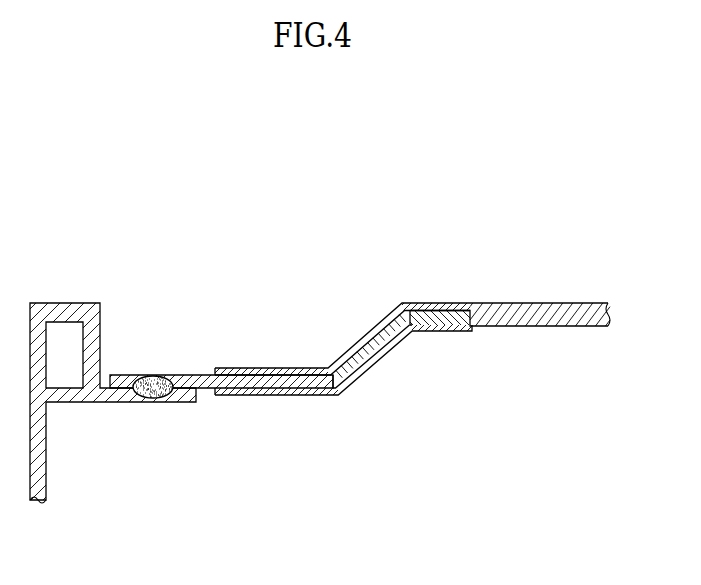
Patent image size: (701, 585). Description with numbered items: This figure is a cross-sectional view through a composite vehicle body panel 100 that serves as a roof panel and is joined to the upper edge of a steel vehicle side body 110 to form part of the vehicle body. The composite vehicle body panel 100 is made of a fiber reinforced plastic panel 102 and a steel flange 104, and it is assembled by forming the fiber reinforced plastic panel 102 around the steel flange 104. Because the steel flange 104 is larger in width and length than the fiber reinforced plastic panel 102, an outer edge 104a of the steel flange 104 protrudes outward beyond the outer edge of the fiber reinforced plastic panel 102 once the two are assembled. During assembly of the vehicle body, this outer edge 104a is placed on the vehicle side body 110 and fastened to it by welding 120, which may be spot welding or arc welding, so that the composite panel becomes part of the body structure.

The composite vehicle body panel 100 is at (360, 349).
The fiber reinforced plastic panel 102 is at (541, 327).
The steel flange 104 is at (379, 341).
The outer edge of the steel flange 104a is at (120, 373).
The vehicle side body 110 is at (45, 455).
The welding 120 is at (157, 399).